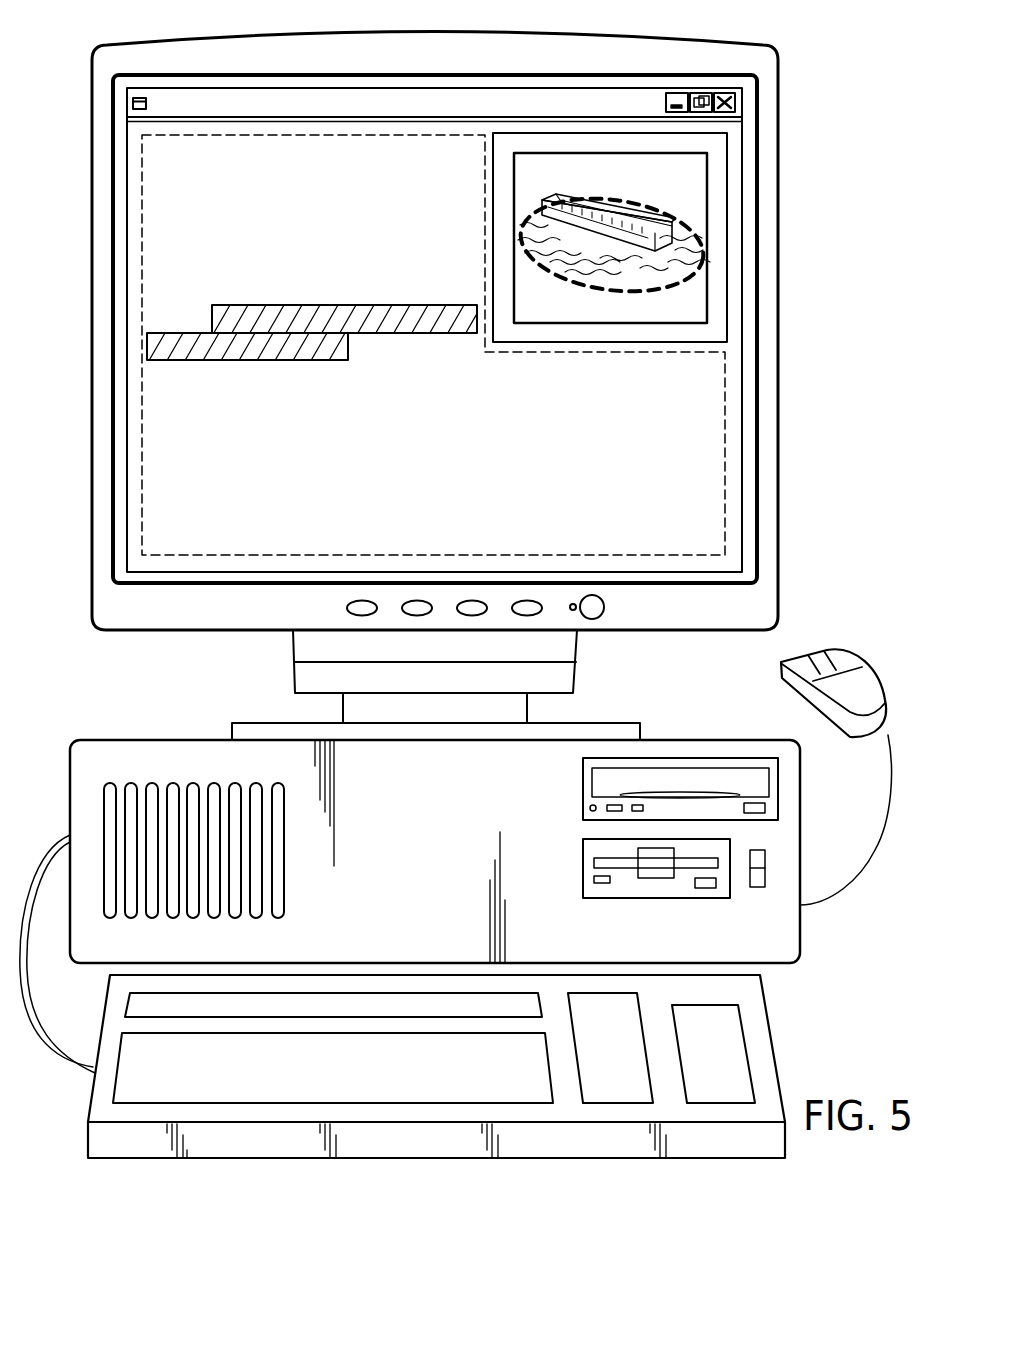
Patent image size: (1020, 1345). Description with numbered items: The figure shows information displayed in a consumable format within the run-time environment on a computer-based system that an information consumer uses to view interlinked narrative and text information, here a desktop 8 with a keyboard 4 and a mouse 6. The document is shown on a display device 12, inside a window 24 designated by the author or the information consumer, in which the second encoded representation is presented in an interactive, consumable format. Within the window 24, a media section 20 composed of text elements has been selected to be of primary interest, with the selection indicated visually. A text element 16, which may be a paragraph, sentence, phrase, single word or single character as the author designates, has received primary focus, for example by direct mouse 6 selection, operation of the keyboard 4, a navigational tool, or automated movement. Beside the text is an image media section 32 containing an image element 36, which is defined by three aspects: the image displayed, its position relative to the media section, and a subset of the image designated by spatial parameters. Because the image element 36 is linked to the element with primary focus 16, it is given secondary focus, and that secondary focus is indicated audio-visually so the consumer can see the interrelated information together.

The keyboard 4 is at (783, 1093).
The mouse 6 is at (832, 653).
The desktop 8 is at (695, 739).
The display device 12 is at (190, 633).
The text element 16 is at (148, 333).
The media section 20 is at (620, 556).
The window 24 is at (180, 87).
The media section 32 is at (610, 133).
The image element 36 is at (697, 227).